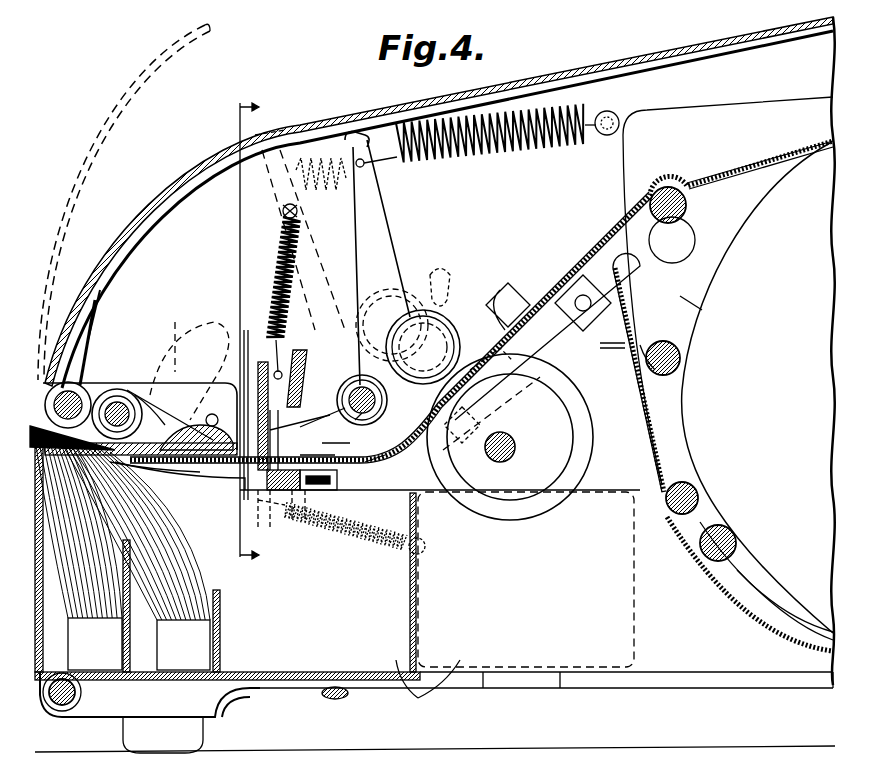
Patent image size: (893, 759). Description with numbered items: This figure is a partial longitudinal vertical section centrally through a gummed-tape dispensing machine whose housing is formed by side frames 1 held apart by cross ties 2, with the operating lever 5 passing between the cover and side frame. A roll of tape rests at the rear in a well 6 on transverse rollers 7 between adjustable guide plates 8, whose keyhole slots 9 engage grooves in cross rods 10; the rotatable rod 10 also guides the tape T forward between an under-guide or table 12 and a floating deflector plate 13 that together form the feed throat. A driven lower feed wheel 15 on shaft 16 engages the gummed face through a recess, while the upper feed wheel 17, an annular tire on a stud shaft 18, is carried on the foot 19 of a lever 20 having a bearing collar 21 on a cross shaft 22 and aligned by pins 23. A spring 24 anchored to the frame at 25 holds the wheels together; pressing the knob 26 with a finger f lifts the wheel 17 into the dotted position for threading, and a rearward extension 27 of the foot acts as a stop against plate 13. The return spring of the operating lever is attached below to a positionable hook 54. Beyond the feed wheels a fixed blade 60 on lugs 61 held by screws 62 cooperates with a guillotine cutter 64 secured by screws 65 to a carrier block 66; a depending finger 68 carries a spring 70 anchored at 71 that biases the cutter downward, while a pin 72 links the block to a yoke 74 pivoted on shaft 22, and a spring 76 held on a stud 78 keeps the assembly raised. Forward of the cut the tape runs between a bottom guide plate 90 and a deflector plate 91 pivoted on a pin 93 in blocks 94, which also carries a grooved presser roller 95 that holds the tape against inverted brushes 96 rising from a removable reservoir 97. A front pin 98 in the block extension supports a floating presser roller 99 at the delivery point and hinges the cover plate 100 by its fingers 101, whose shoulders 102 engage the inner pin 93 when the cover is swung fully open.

The side frames 1 is at (698, 675).
The cross ties 2 is at (683, 484).
The operating lever 5 is at (256, 331).
The well 6 is at (752, 600).
The transverse rollers 7 is at (683, 358).
The guide plate 8 is at (745, 105).
The keyhole slots 9 is at (690, 243).
The cross rod 10 is at (688, 200).
The under-guide or table 12 is at (388, 453).
The floating guide or deflector plate 13 is at (500, 325).
The lower feed wheel 15 is at (570, 422).
The shaft 16 is at (510, 457).
The upper feed wheel 17 is at (425, 300).
The stud shaft 18 is at (445, 338).
The foot 19 is at (383, 406).
The lever 20 is at (390, 220).
The bearing collar 21 is at (358, 425).
The cross shaft 22 is at (318, 424).
The pins 23 is at (350, 400).
The spring 24 is at (518, 150).
The spring anchorage 25 is at (616, 117).
The finger piece or knob 26 is at (362, 130).
The rearward extension 27 is at (442, 298).
The hook 54 is at (347, 696).
The fixed blade 60 is at (338, 480).
The lugs 61 is at (330, 486).
The screws 62 is at (312, 492).
The movable blade or cutter 64 is at (283, 428).
The screws 65 is at (214, 413).
The blade-carrying block 66 is at (263, 365).
The depending finger 68 is at (262, 533).
The spring 70 is at (360, 552).
The spring anchorage 71 is at (427, 550).
The pin 72 is at (246, 365).
The supporting yoke 74 is at (297, 362).
The spring 76 is at (280, 320).
The stud 78 is at (298, 212).
The bottom guide plate 90 is at (180, 466).
The deflector or guide plate 91 is at (210, 428).
The pin 93 is at (118, 400).
The blocks 94 is at (205, 405).
The roller guide element 95 is at (135, 395).
The inverted brushes 96 is at (175, 580).
The liquid reservoir 97 is at (428, 688).
The transverse pin 98 is at (103, 392).
The rotary presser or guide element 99 is at (70, 380).
The forward cover plate 100 is at (113, 107).
The fingers 101 is at (100, 325).
The shoulders 102 is at (160, 482).
The tape T is at (617, 237).
The finger f is at (236, 145).